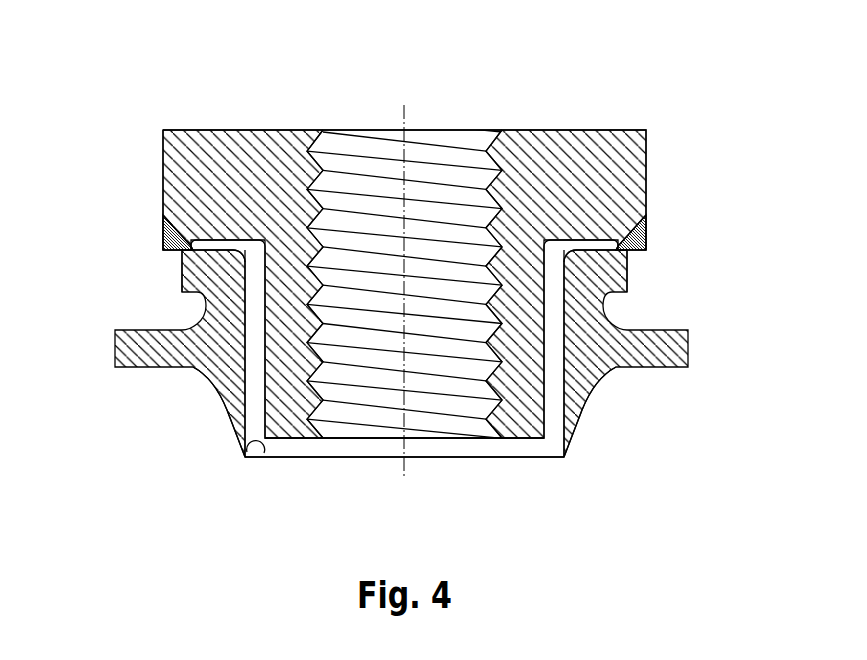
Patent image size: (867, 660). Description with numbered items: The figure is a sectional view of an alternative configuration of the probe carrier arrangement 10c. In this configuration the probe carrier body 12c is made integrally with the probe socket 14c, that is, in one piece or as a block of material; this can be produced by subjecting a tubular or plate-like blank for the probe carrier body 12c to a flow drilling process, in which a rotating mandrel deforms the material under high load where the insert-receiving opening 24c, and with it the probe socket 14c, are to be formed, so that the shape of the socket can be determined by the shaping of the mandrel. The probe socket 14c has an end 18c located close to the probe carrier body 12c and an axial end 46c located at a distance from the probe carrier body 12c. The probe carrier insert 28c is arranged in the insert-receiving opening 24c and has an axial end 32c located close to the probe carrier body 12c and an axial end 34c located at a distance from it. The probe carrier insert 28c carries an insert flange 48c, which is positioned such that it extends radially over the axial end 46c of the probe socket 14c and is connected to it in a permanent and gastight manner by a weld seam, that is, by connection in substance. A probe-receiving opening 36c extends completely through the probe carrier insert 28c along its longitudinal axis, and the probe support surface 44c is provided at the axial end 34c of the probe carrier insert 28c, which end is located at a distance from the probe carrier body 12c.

The fastening arrangement 10c is at (680, 93).
The probe carrier body 12c is at (683, 348).
The probe socket 14c is at (200, 308).
The end of the probe socket 18c is at (585, 402).
The insert-receiving opening 24c is at (262, 456).
The probe carrier insert 28c is at (295, 440).
The axial end of the probe carrier insert 32c is at (517, 440).
The axial end of the probe carrier insert 34c is at (378, 130).
The probe-receiving opening 36c is at (443, 165).
The probe support surface 44c is at (235, 130).
The axial end of the probe socket 46c is at (630, 265).
The insert flange 48c is at (627, 197).